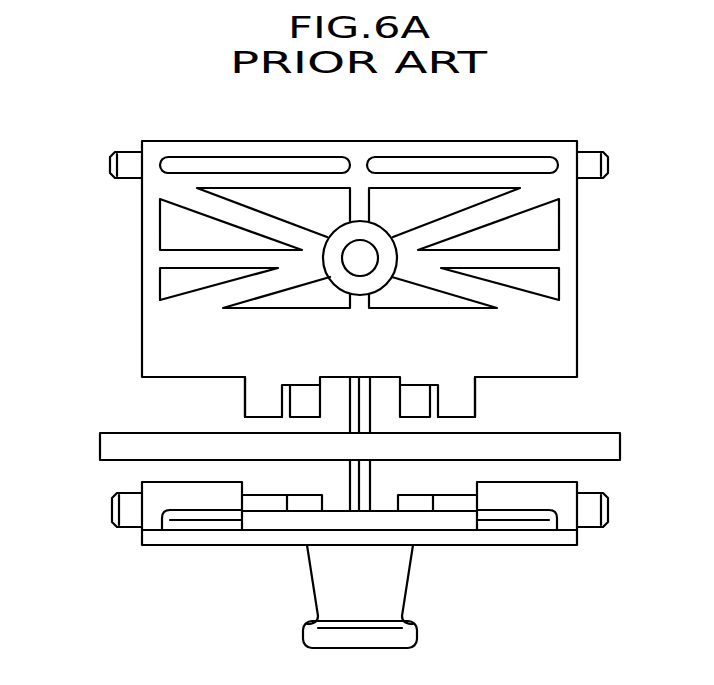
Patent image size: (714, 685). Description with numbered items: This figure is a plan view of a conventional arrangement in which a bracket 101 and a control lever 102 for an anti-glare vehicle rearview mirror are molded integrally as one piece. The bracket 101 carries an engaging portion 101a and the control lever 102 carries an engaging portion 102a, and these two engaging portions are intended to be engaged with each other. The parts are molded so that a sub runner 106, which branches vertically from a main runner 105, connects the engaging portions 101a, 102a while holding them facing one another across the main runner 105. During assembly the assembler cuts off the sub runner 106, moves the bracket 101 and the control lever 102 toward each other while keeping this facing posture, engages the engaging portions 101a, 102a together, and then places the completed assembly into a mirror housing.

The bracket 101 is at (128, 135).
The engaging portion of the bracket 101a is at (262, 398).
The control lever 102 is at (562, 548).
The engaging portion of the control lever 102a is at (262, 503).
The main runner 105 is at (138, 447).
The sub runner 106 is at (358, 407).